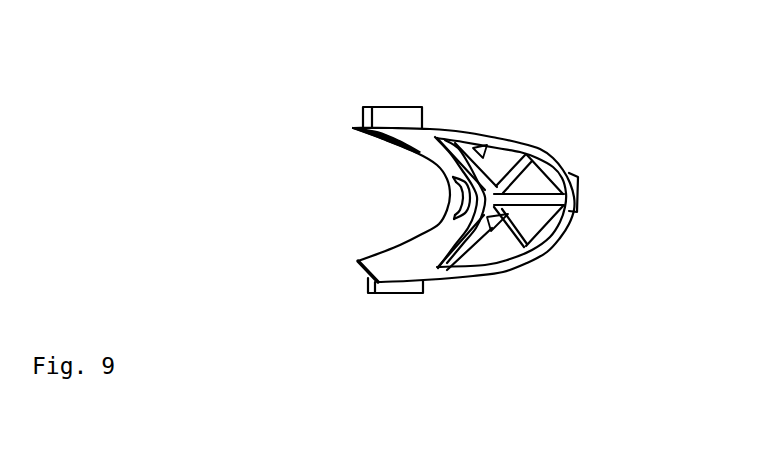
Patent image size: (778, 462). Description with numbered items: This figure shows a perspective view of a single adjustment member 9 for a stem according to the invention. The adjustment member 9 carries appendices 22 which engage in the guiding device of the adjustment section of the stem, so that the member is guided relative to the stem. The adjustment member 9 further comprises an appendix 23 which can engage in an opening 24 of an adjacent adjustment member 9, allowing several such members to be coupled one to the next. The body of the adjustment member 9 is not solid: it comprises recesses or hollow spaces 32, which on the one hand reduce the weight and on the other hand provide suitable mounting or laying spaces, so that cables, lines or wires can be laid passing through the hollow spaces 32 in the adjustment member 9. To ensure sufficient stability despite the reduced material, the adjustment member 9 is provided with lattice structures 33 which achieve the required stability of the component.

The adjustment member 9 is at (585, 124).
The appendices 22 is at (390, 118).
The appendix 23 is at (580, 182).
The opening 24 is at (458, 190).
The hollow spaces 32 is at (513, 238).
The lattice structures 33 is at (495, 163).